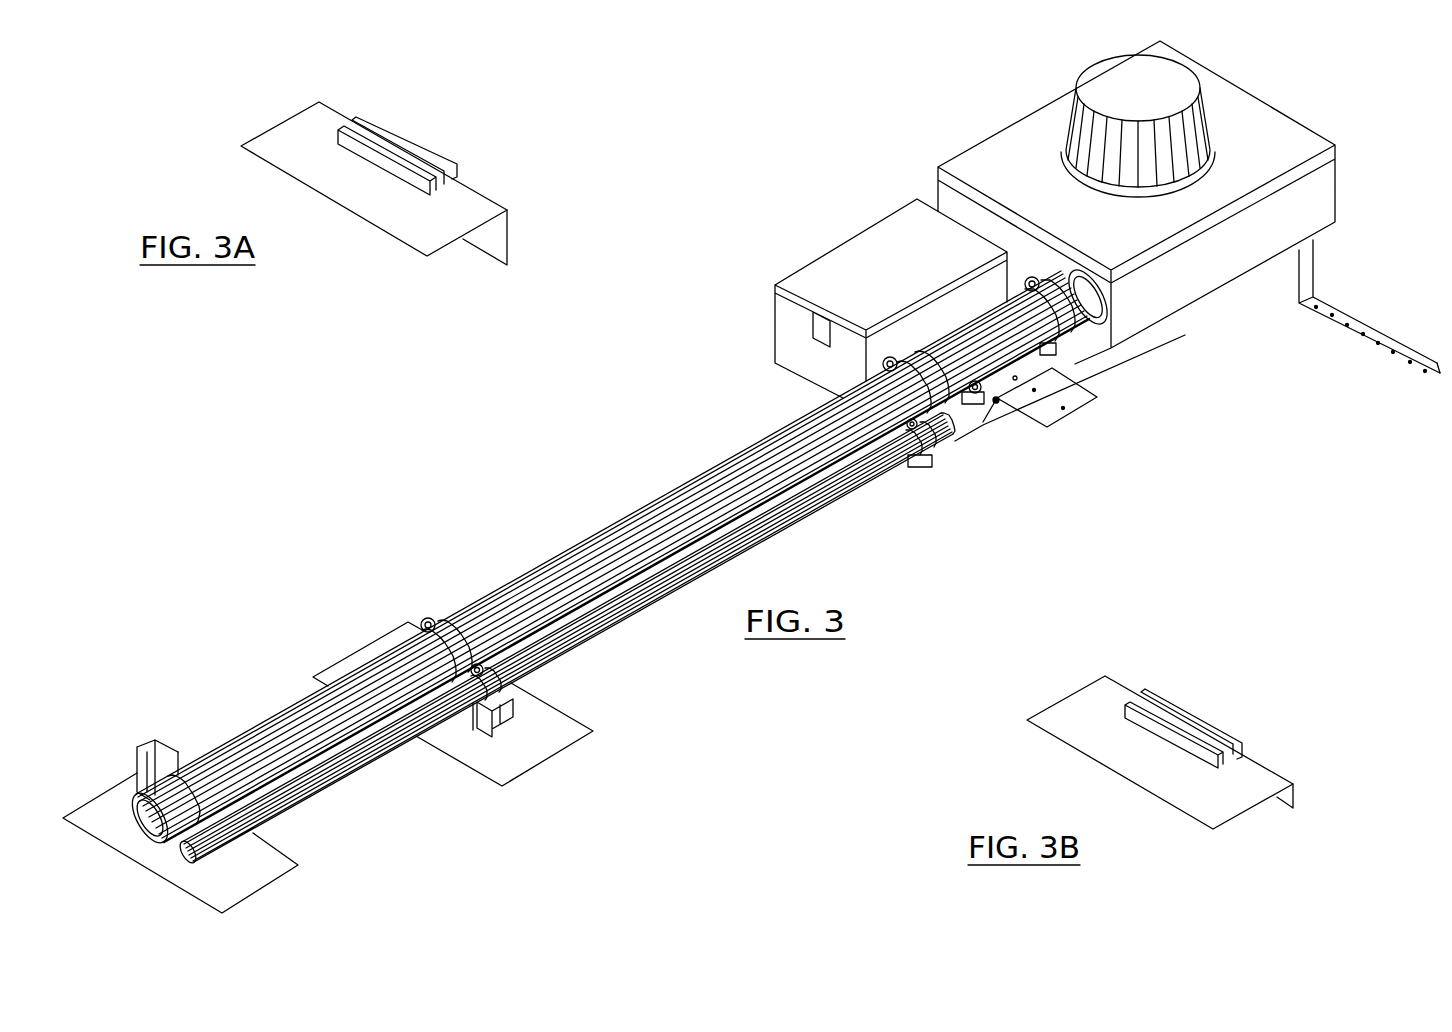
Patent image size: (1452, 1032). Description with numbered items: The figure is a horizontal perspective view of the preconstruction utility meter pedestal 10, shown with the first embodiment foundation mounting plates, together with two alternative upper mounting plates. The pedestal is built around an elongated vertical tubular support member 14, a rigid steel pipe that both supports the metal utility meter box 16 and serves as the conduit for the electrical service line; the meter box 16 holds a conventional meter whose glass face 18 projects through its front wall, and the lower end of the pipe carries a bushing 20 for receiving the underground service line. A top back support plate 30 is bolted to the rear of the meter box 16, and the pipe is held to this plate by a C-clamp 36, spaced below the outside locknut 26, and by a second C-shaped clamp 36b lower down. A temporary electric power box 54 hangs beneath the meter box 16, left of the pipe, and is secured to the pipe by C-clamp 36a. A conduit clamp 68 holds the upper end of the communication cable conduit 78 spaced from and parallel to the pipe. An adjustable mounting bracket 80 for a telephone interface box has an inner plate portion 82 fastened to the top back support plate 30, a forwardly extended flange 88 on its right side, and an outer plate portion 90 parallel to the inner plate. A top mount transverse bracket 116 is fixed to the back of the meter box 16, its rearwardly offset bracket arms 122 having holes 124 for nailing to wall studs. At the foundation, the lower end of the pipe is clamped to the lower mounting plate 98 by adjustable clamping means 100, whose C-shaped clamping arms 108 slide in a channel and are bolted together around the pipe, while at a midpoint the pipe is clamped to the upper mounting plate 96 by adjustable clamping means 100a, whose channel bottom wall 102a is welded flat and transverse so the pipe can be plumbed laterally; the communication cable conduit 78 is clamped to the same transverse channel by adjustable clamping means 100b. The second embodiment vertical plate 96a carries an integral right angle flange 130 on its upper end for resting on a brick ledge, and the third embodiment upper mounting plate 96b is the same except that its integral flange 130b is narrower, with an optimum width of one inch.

In FIG. 3, the preconstruction utility meter pedestal 10 is at (705, 460).
In FIG. 3, the elongated vertical tubular support member 14 is at (648, 543).
In FIG. 3, the metal utility meter box 16 is at (1146, 295).
In FIG. 3, the glass face 18 is at (1133, 87).
In FIG. 3, the bushing 20 is at (163, 840).
In FIG. 3, the outside locknut 26 is at (1090, 336).
In FIG. 3, the top back support plate 30 is at (1083, 348).
In FIG. 3, the C-clamp 36 is at (1078, 290).
In FIG. 3, the C-clamp 36a is at (973, 402).
In FIG. 3, the second C-shaped clamp 36b is at (888, 372).
In FIG. 3, the temporary electric power box 54 is at (858, 272).
In FIG. 3, the conduit clamp 68 is at (930, 463).
In FIG. 3, the communication cable conduit 78 is at (605, 618).
In FIG. 3, the adjustable mounting bracket 80 is at (1065, 430).
In FIG. 3, the inner plate portion 82 is at (1017, 370).
In FIG. 3, the forwardly extended flange 88 is at (1002, 405).
In FIG. 3, the outer plate portion 90 is at (1078, 394).
In FIG. 3, the upper mounting plate 96 is at (543, 745).
In FIG. 3, the lower mounting plate 98 is at (263, 873).
In FIG. 3, the adjustable clamping means 100 is at (147, 733).
In FIG. 3, the adjustable clamping means 100a is at (447, 612).
In FIG. 3A, the adjustable clamping means 100a is at (438, 148).
In FIG. 3B, the adjustable clamping means 100a is at (1190, 705).
In FIG. 3, the adjustable clamping means 100b is at (480, 702).
In FIG. 3, the bottom wall 102a is at (493, 714).
In FIG. 3, the C-shaped clamping straps or arms 108 is at (177, 777).
In FIG. 3, the top mount transverse bracket 116 is at (1395, 363).
In FIG. 3, the bracket arms 122 is at (1417, 368).
In FIG. 3, the holes 124 is at (1332, 315).
In FIG. 3A, the vertical plate 96a is at (292, 143).
In FIG. 3B, the upper mounting plate 96b is at (1092, 726).
In FIG. 3A, the integral flange 130 is at (485, 238).
In FIG. 3B, the integral flange 130b is at (1290, 795).